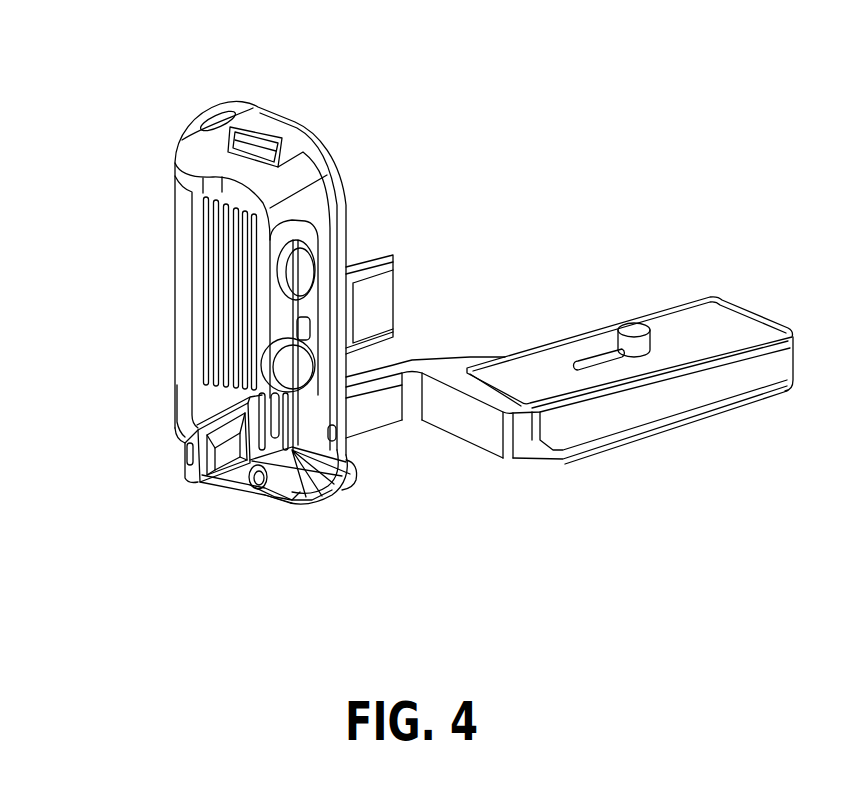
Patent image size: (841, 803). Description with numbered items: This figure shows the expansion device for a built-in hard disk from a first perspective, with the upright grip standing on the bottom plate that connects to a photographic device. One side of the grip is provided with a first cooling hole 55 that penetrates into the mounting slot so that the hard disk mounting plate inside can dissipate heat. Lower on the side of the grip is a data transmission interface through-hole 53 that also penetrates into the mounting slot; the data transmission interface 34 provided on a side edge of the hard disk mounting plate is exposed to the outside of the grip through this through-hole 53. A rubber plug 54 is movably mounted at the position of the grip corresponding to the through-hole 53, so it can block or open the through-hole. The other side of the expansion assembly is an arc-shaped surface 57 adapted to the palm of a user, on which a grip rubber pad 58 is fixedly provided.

The first cooling hole 55 is at (215, 302).
The grip rubber pad 58 is at (173, 297).
The arc-shaped surface 57 is at (178, 440).
The rubber plug 54 is at (261, 490).
The data transmission interface 34 is at (298, 458).
The data transmission interface through-hole 53 is at (352, 478).